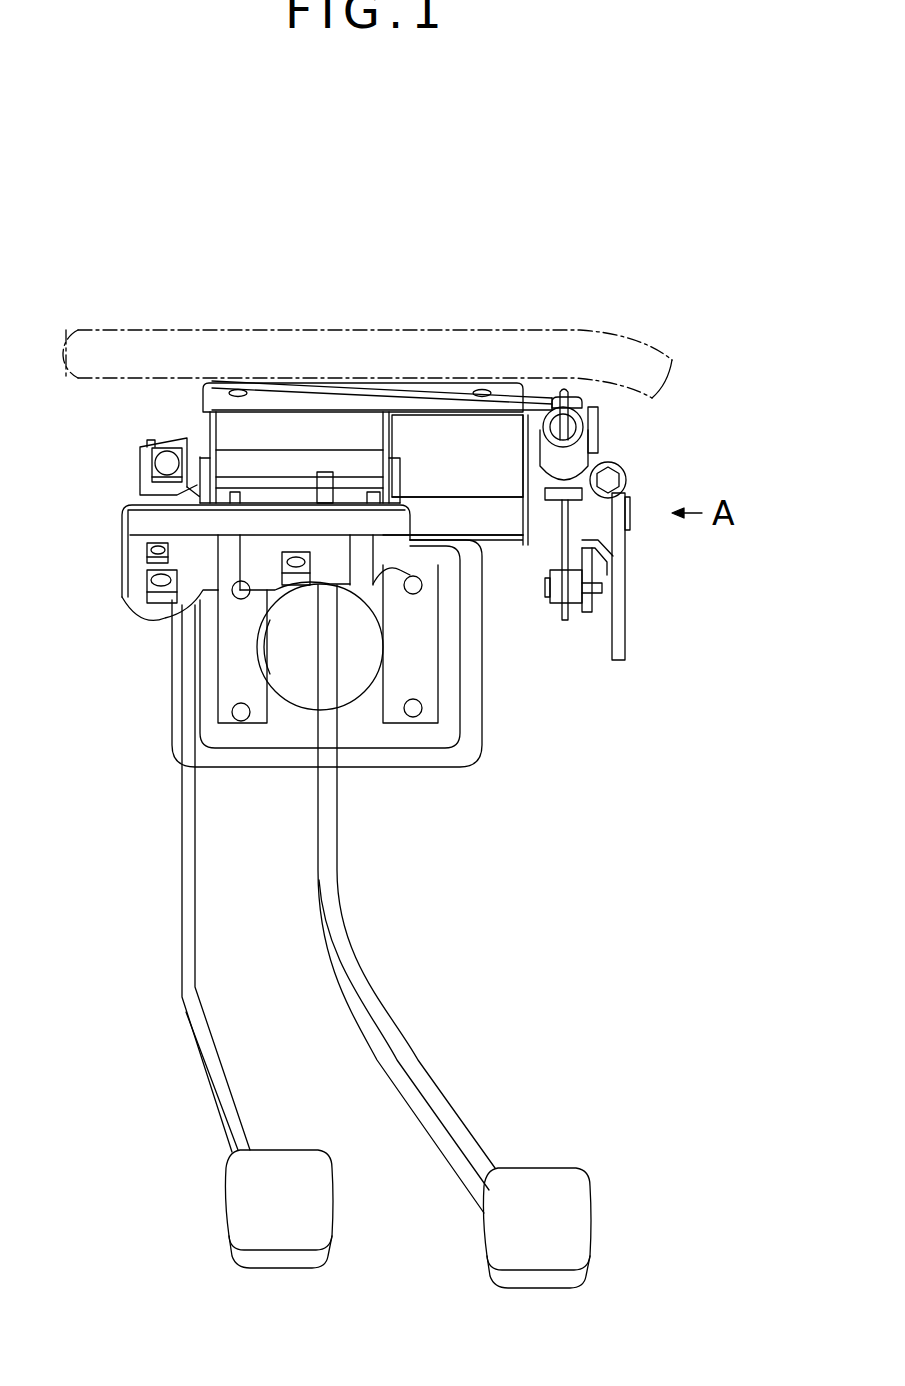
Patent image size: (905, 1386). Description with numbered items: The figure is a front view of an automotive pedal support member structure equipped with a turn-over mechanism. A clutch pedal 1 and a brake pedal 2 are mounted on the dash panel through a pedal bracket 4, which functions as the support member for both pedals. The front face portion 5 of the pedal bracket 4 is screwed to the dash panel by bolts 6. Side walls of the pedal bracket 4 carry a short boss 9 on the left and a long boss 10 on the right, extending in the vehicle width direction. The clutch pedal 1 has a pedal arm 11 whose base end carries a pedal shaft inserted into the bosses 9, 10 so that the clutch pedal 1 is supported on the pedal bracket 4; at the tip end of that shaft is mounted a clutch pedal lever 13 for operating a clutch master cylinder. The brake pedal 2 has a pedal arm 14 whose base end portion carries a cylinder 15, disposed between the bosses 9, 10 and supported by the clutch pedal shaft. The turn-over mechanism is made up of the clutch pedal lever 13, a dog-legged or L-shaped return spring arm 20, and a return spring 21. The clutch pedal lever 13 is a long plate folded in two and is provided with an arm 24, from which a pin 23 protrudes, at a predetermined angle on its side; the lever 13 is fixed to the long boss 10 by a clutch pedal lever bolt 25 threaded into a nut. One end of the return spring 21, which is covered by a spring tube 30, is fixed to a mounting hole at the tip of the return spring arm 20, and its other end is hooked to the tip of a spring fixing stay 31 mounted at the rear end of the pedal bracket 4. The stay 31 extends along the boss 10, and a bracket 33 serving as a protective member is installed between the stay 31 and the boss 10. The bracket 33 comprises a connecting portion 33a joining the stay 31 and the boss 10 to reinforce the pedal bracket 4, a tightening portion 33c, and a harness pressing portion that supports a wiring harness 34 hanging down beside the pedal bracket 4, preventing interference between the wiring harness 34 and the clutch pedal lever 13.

The clutch pedal 1 is at (232, 1202).
The brake pedal 2 is at (583, 1208).
The pedal bracket 4 is at (170, 665).
The front face portion 5 is at (283, 723).
The bolts 6 is at (420, 712).
The short boss 9 is at (207, 497).
The long boss 10 is at (505, 533).
The pedal arm 11 is at (185, 957).
The clutch pedal lever 13 is at (625, 620).
The pedal arm 14 is at (365, 962).
The cylinder 15 is at (295, 497).
The return spring arm 20 is at (565, 625).
The return spring 21 is at (585, 420).
The pin 23 is at (603, 588).
The arm 24 is at (585, 607).
The clutch pedal lever bolt 25 is at (617, 470).
The spring tube 30 is at (583, 453).
The spring fixing stay 31 is at (400, 390).
The bracket 33 is at (518, 382).
The connecting portion 33a is at (515, 448).
The tightening portion 33c is at (480, 382).
The wiring harness 34 is at (218, 328).